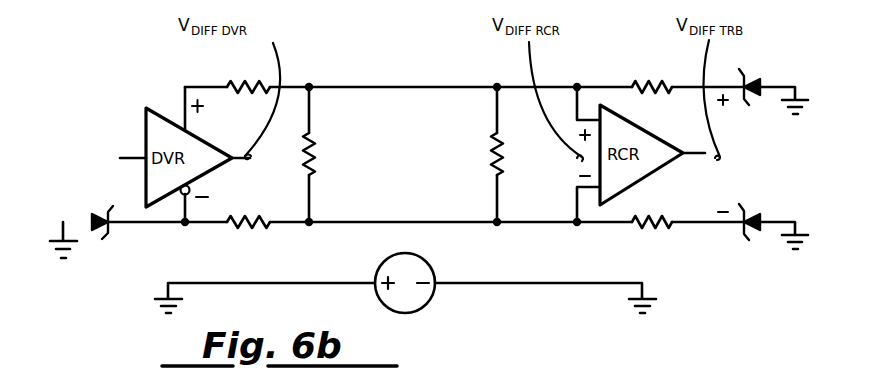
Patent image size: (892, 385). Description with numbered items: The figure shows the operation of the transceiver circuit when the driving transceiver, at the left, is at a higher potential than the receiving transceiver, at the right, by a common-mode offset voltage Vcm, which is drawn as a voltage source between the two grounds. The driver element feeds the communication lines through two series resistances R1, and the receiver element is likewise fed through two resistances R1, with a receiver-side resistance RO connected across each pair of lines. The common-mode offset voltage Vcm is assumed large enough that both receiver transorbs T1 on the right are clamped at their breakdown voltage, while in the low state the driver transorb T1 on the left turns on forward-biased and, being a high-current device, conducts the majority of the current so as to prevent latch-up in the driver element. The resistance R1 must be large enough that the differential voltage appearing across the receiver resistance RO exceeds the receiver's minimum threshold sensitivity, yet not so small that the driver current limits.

The resistance R1 is at (449, 159).
The receiver-side resistance RO is at (417, 154).
The transorb T1 is at (430, 158).
The common-mode offset voltage Vcm is at (422, 286).